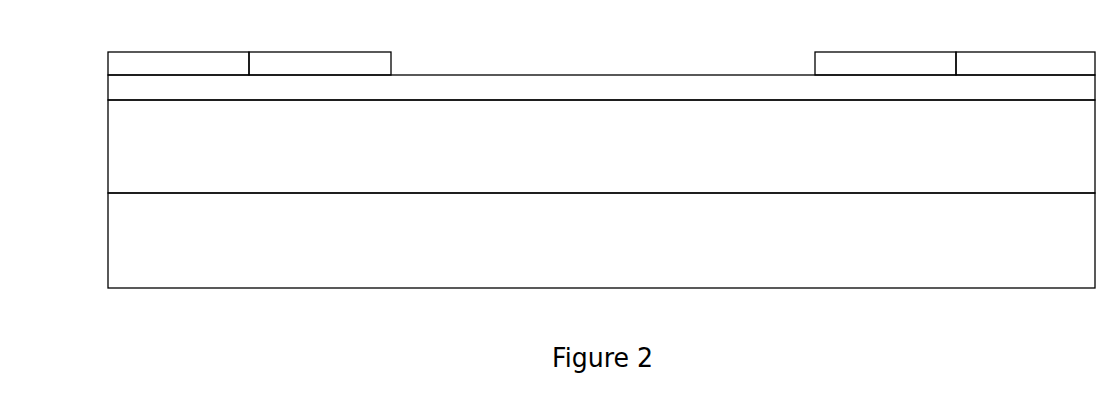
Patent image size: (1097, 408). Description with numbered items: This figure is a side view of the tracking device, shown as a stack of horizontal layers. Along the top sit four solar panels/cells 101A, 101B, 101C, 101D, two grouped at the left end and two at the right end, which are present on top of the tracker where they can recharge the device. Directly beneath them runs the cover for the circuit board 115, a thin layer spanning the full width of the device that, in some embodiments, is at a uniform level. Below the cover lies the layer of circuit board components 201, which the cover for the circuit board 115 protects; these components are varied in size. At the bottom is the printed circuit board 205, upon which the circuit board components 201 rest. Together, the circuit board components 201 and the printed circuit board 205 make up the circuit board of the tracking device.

The solar panel/cell 101A is at (178, 63).
The solar panel/cell 101B is at (320, 63).
The solar panel/cell 101C is at (885, 63).
The solar panel/cell 101D is at (1025, 63).
The cover for the circuit board 115 is at (601, 87).
The circuit board components 201 is at (601, 146).
The printed circuit board 205 is at (601, 240).